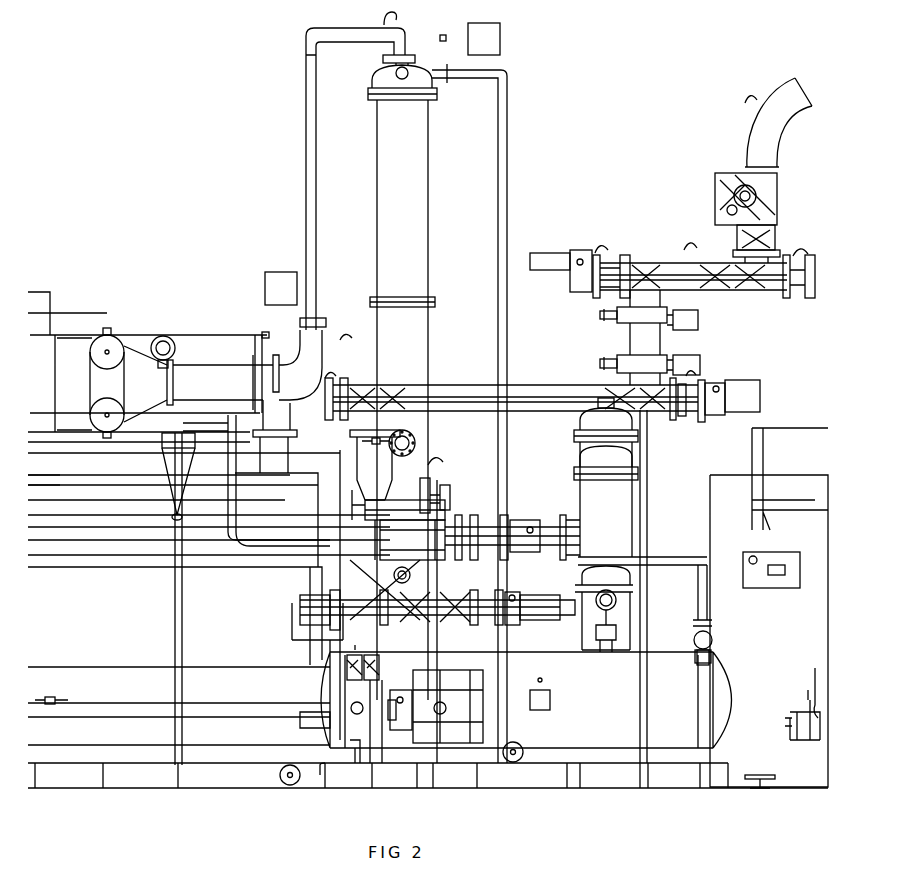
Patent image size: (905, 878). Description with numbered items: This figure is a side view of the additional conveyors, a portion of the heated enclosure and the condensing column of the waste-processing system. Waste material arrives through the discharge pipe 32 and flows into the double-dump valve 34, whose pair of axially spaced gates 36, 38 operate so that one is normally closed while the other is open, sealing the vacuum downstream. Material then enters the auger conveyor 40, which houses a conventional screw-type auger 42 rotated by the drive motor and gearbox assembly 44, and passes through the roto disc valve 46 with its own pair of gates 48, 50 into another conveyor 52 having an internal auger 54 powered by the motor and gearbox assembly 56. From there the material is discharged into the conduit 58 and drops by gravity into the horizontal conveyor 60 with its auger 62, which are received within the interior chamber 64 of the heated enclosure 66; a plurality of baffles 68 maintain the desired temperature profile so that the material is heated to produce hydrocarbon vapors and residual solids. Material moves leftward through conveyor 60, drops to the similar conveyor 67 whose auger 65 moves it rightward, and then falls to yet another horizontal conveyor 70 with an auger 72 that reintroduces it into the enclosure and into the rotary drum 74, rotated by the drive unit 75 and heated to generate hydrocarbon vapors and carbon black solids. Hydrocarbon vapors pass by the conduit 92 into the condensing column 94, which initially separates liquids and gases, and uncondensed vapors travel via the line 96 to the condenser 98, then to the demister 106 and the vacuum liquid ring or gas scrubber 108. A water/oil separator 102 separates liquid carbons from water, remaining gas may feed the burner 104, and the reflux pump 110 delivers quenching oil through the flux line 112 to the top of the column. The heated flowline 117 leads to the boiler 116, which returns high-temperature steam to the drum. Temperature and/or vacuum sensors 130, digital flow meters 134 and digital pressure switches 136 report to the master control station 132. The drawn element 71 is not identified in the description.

The discharge pipe 32 is at (784, 135).
The double-dump valve 34 is at (714, 190).
The gate 36 is at (769, 191).
The gate 38 is at (772, 226).
The auger conveyor 40 is at (649, 263).
The screw-type auger 42 is at (752, 292).
The drive motor and gearbox assembly 44 is at (568, 253).
The roto disc valve 46 is at (616, 337).
The gate 48 is at (702, 328).
The gate 50 is at (704, 360).
The conveyor 52 is at (539, 386).
The internal auger 54 is at (640, 414).
The motor and gearbox assembly 56 is at (734, 411).
The conduit 58 is at (349, 443).
The horizontal conveyor 60 is at (448, 496).
The auger 62 is at (412, 499).
The interior chamber 64 is at (74, 482).
The auger 65 is at (443, 536).
The heated enclosure 66 is at (95, 753).
The conveyor 67 is at (517, 527).
The baffles 68 is at (146, 505).
The horizontal conveyor 70 is at (487, 611).
The drive motor 71 is at (509, 616).
The auger 72 is at (462, 606).
The rotary drum 74 is at (242, 653).
The drive unit 75 is at (412, 728).
The conduit 92 is at (412, 440).
The condensing column 94 is at (407, 213).
The line 96 is at (320, 184).
The condenser 98 is at (195, 338).
The water/oil separator 102 is at (723, 656).
The burner 104 is at (298, 721).
The demister 106 is at (575, 434).
The vacuum liquid ring or gas scrubber 108 is at (614, 503).
The reflux pump 110 is at (514, 766).
The flux line 112 is at (512, 127).
The boiler 116 is at (129, 350).
The heated flowline 117 is at (104, 316).
The temperature and/or vacuum sensors 130 is at (399, 25).
The master control station 132 is at (807, 573).
The digital flow meters 134 is at (442, 38).
The digital pressure switches 136 is at (381, 186).